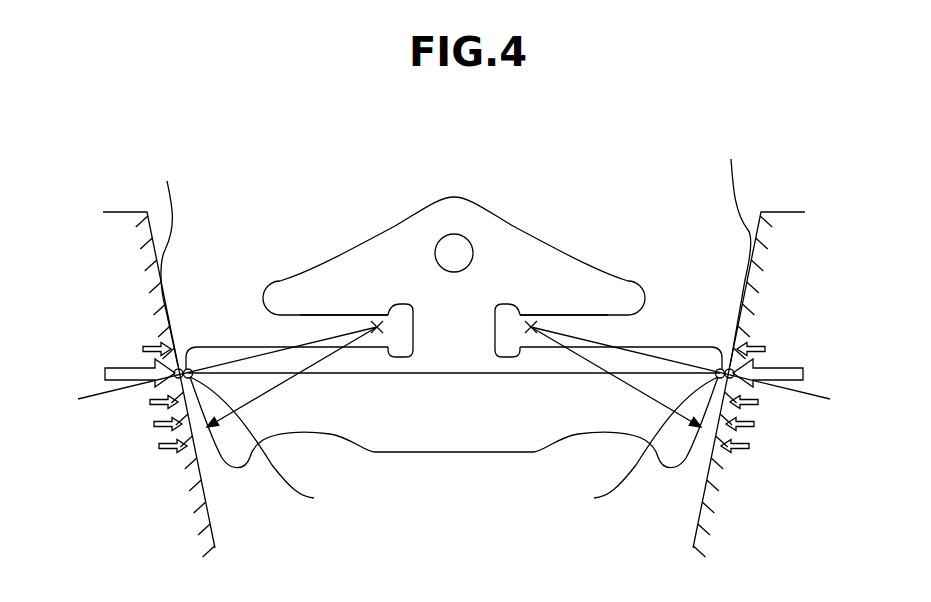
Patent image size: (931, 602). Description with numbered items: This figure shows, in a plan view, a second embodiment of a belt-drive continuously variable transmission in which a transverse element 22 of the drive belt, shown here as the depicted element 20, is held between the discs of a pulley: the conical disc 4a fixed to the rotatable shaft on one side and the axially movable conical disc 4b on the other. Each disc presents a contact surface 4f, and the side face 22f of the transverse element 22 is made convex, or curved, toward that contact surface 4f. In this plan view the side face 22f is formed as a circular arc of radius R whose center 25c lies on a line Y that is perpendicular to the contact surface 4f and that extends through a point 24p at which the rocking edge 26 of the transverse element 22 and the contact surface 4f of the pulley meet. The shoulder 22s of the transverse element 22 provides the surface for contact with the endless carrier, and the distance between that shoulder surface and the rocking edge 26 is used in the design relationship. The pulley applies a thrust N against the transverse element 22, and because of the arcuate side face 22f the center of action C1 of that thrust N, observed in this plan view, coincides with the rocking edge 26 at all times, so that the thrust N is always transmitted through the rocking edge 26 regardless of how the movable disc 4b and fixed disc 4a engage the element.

The anchor plate 20 is at (521, 212).
The transverse element 22 is at (378, 226).
The side face 22f is at (180, 366).
The shoulder 22s is at (253, 346).
The point 24p is at (175, 343).
The center 25c is at (376, 321).
The rocking edge 26 is at (427, 373).
The conical disc 4b is at (58, 262).
The conical disc 4a is at (853, 263).
The contact surface 4f is at (465, 250).
The center of action of the thrust C1 is at (454, 448).
The radius R is at (454, 377).
The line Y is at (330, 337).
The thrust N is at (453, 373).